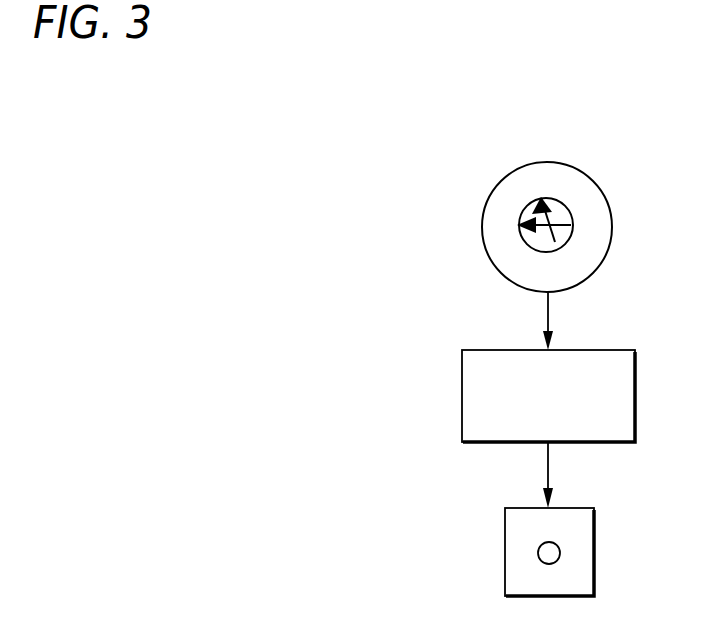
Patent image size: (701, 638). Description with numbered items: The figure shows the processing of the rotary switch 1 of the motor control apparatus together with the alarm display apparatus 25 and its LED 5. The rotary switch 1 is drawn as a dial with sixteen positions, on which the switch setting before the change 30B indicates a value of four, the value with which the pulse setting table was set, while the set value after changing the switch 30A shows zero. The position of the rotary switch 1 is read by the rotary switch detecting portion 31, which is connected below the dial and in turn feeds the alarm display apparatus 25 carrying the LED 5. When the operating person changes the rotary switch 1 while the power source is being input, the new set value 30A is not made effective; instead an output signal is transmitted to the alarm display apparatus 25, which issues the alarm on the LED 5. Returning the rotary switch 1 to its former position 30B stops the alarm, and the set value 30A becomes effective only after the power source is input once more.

The rotary switch 1 is at (592, 175).
The set value after changing rotary switch 30A is at (518, 226).
The switch setting before changing rotary switch 30B is at (539, 197).
The rotary switch detecting portion 31 is at (548, 396).
The alarm display apparatus 25 is at (594, 535).
The LED 5 is at (538, 553).